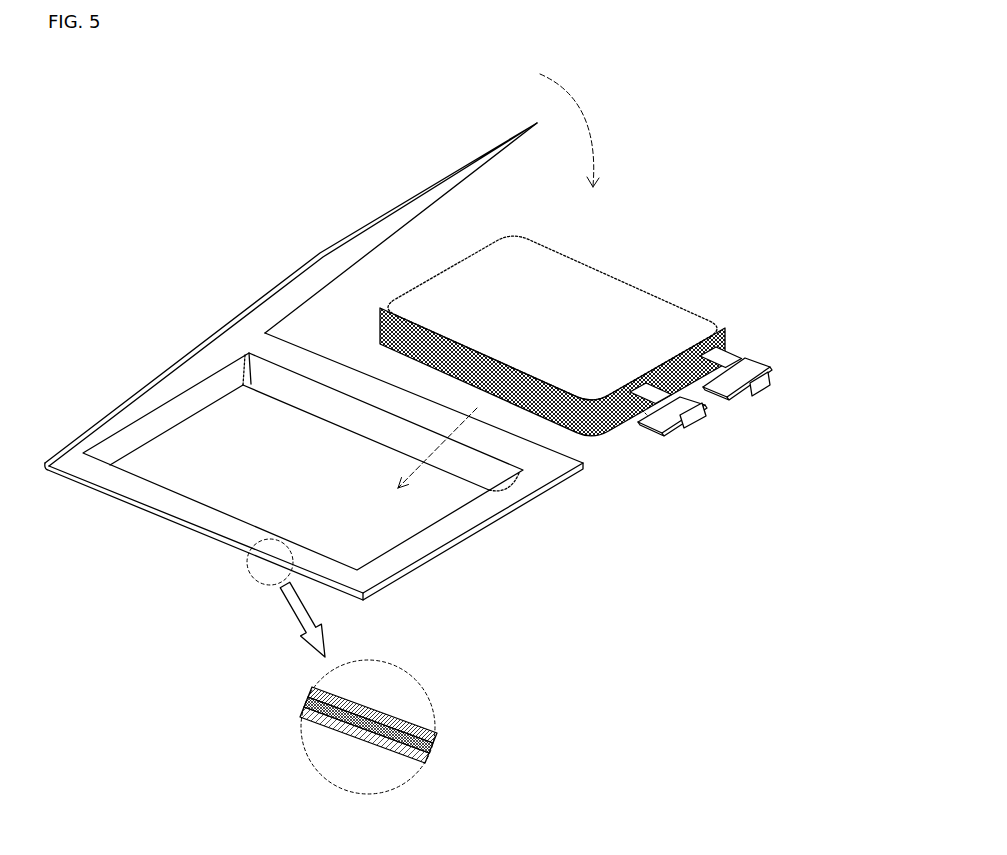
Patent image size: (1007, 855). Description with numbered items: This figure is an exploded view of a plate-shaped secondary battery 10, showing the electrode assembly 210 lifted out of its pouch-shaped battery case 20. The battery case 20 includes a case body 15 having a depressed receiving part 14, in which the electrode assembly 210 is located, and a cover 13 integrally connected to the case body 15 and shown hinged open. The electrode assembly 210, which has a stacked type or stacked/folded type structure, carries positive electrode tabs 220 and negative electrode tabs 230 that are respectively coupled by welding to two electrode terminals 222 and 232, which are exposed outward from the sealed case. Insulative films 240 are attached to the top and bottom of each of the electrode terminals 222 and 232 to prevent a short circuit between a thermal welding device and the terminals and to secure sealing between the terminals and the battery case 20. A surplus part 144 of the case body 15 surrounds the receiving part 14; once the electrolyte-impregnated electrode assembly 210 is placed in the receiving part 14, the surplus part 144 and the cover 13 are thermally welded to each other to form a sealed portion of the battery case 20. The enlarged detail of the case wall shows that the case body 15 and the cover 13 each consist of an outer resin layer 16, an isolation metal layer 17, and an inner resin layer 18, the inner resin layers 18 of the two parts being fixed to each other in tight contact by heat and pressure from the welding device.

The plate-shaped secondary battery 10 is at (85, 164).
The cover 13 is at (345, 232).
The depressed receiving part 14 is at (165, 473).
The case body 15 is at (203, 532).
The outer resin layer 16 is at (437, 736).
The isolation metal layer 17 is at (432, 749).
The inner resin layer 18 is at (428, 758).
The pouch-shaped battery case 20 is at (147, 333).
The surplus part 144 is at (455, 527).
The electrode assembly 210 is at (628, 300).
The positive electrode tabs 220 is at (628, 432).
The electrode terminal 222 is at (672, 445).
The negative electrode tabs 230 is at (728, 335).
The electrode terminal 232 is at (770, 378).
The insulative films 240 is at (700, 420).